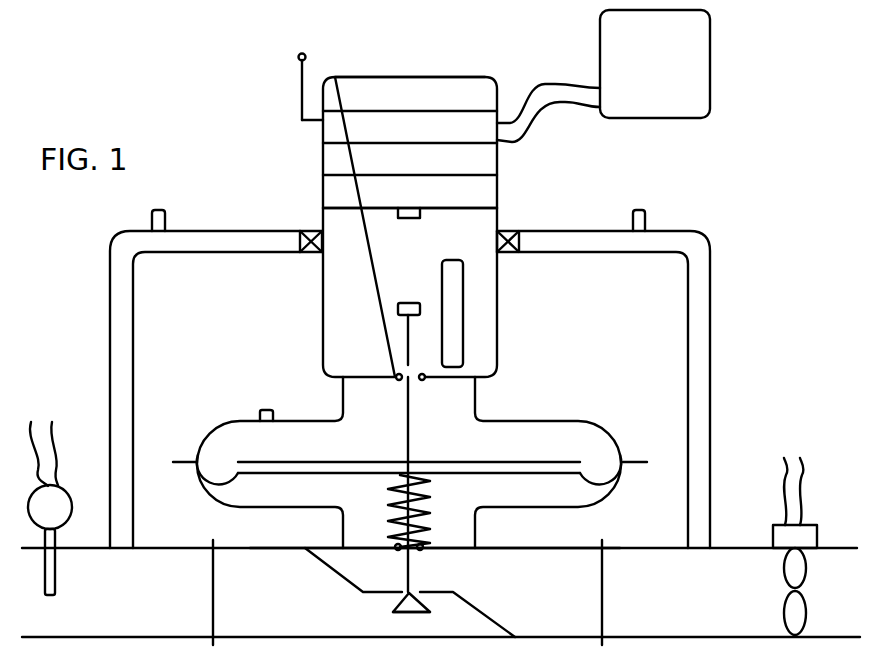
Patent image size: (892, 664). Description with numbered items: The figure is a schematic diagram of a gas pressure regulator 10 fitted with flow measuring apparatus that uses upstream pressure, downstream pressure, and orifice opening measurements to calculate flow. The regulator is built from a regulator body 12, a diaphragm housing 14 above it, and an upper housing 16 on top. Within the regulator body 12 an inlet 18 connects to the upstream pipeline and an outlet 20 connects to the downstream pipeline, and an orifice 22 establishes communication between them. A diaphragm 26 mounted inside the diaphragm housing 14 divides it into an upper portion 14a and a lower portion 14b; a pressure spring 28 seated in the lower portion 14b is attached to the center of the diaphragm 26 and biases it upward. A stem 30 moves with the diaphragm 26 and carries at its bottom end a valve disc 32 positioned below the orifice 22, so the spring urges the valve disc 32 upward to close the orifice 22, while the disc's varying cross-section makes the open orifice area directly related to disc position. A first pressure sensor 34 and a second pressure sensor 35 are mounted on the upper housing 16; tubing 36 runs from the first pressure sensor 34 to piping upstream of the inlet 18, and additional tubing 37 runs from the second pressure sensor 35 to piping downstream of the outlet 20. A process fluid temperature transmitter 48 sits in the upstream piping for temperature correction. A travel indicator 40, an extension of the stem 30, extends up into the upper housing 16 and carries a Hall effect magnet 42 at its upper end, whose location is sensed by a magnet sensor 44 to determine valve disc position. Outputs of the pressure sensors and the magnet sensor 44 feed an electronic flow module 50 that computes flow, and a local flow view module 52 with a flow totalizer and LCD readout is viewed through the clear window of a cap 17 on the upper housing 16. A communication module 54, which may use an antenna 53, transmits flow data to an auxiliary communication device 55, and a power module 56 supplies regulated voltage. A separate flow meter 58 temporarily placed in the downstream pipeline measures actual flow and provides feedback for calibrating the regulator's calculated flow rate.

The gas pressure regulator 10 is at (535, 390).
The regulator body 12 is at (563, 547).
The diaphragm housing 14 is at (212, 436).
The upper portion of diaphragm housing 14a is at (203, 452).
The lower portion of diaphragm housing 14b is at (238, 500).
The upper housing 16 is at (318, 300).
The cap 17 is at (385, 77).
The inlet 18 is at (213, 610).
The outlet 20 is at (602, 605).
The orifice 22 is at (420, 591).
The diaphragm 26 is at (527, 463).
The pressure spring 28 is at (392, 497).
The stem 30 is at (406, 565).
The valve disc 32 is at (398, 608).
The first pressure sensor 34 is at (312, 230).
The second pressure sensor 35 is at (508, 253).
The tubing 36 is at (115, 297).
The additional tubing 37 is at (712, 342).
The travel indicator 40 is at (411, 438).
The Hall effect magnet 42 is at (408, 302).
The magnet sensor 44 is at (457, 315).
The process fluid temperature transmitter 48 is at (66, 506).
The electronic flow module 50 is at (489, 195).
The local flow view module 52 is at (489, 162).
The antenna 53 is at (302, 97).
The communication module 54 is at (328, 130).
The auxiliary communication device 55 is at (677, 118).
The power module 56 is at (452, 87).
The flow meter 58 is at (808, 530).